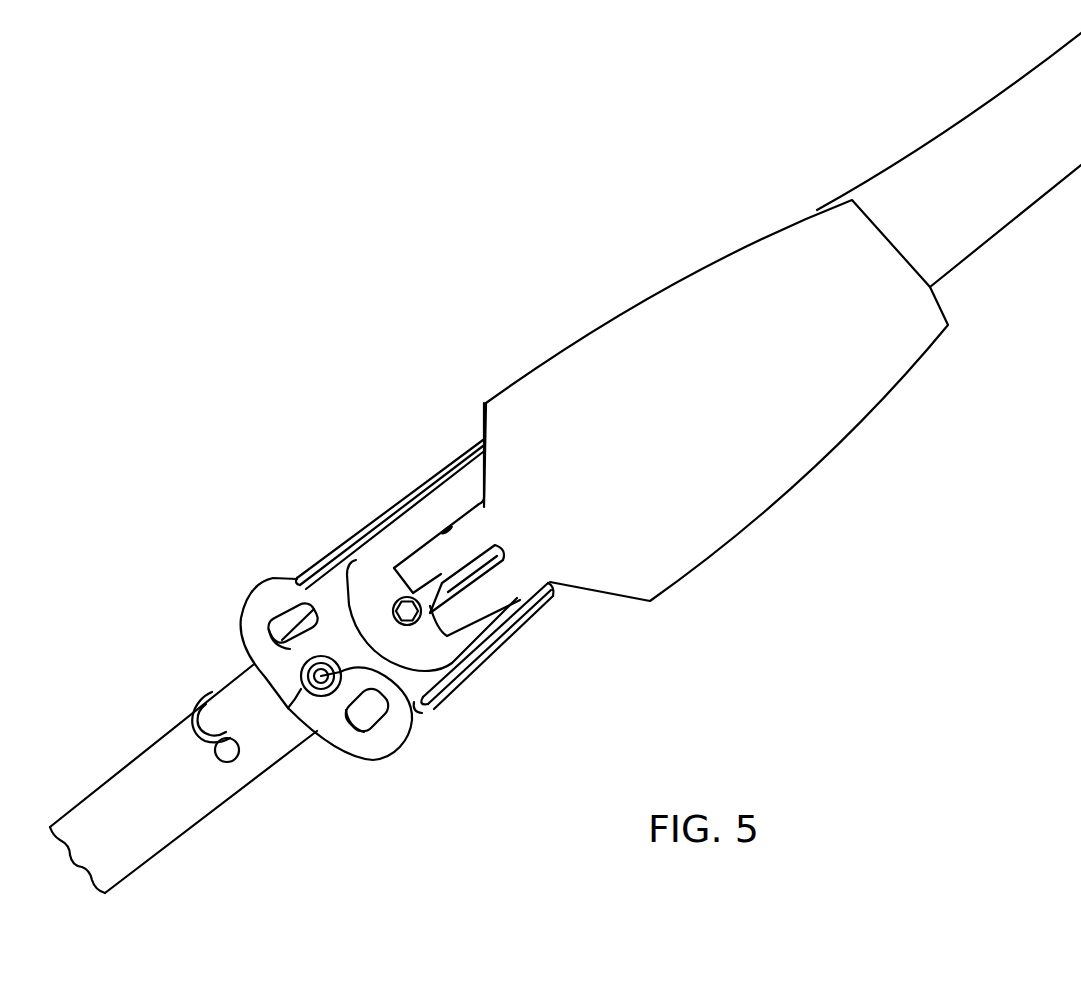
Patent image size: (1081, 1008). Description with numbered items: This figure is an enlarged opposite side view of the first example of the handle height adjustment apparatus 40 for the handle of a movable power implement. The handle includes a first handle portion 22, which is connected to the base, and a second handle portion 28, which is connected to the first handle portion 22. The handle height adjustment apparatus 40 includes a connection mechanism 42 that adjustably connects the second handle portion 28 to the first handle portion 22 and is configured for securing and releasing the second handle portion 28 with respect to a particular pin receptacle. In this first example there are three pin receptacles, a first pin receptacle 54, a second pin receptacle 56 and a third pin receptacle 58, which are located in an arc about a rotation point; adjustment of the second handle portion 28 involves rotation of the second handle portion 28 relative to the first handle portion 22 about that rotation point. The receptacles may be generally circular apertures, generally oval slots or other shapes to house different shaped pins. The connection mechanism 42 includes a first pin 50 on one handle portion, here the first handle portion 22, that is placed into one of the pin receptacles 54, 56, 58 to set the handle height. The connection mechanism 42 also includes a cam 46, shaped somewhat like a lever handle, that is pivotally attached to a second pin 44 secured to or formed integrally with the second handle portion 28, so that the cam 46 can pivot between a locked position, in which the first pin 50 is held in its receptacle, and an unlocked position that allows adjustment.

The first handle portion 22 is at (107, 791).
The second handle portion 28 is at (966, 131).
The handle height adjustment apparatus 40 is at (558, 296).
The connection mechanism 42 is at (343, 521).
The second pin 44 is at (500, 558).
The cam 46 is at (670, 304).
The first pin 50 is at (440, 699).
The first pin receptacle 54 is at (283, 606).
The second pin receptacle 56 is at (301, 689).
The third pin receptacle 58 is at (398, 750).